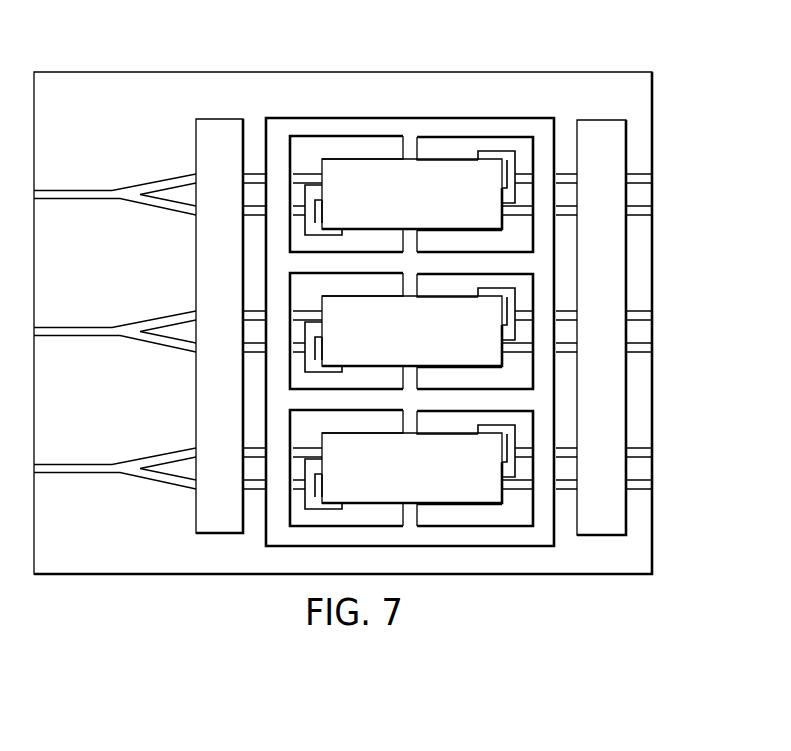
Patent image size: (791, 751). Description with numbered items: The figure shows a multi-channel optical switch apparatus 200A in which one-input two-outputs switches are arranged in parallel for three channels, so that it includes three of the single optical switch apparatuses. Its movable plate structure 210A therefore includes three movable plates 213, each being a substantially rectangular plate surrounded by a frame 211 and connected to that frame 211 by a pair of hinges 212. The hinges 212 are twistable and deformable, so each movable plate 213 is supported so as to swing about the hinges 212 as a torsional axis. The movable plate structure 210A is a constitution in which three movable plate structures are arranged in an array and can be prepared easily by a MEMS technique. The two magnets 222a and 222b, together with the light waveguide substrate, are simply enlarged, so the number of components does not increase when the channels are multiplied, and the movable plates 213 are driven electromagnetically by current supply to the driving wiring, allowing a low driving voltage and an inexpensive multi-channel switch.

The optical switch apparatus 200A is at (611, 61).
The movable plate structure 210A is at (491, 113).
The frame 211 is at (442, 128).
The hinges 212 is at (410, 147).
The movable plate 213 is at (341, 183).
The magnet 222a is at (222, 119).
The magnet 222b is at (607, 250).